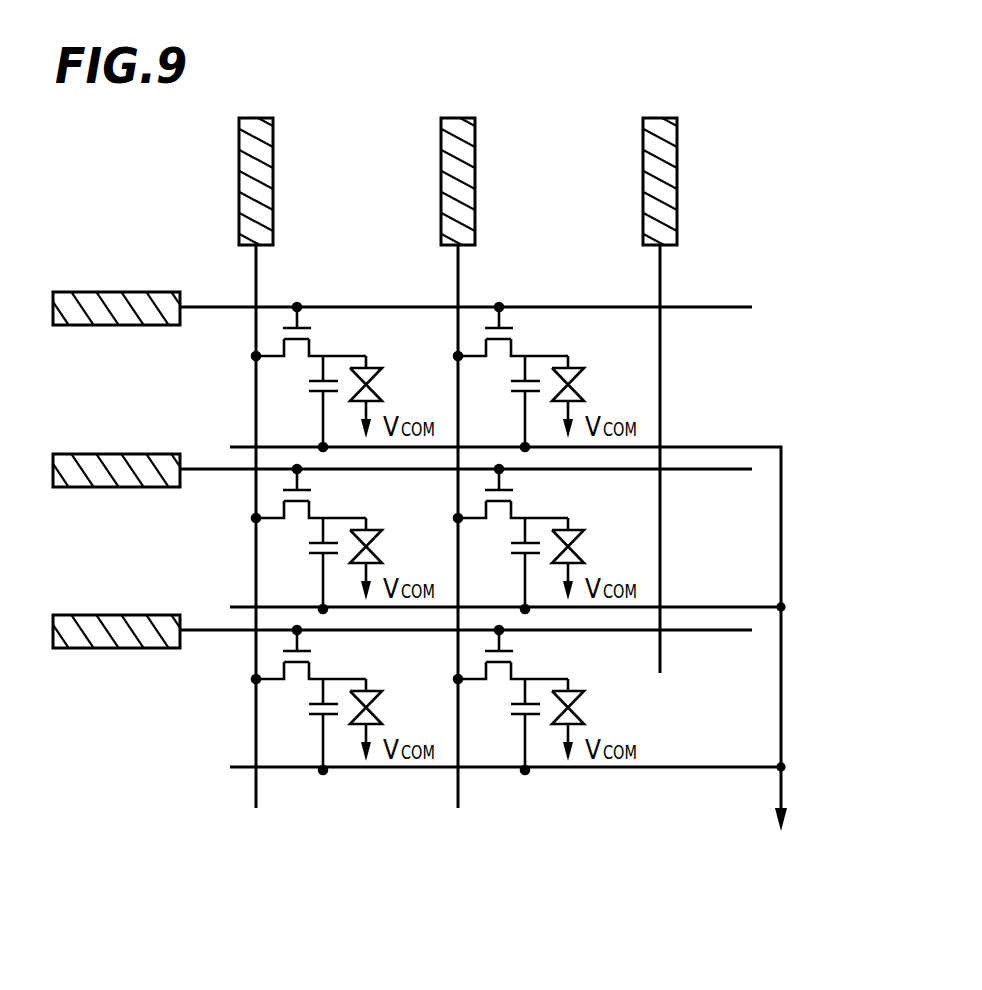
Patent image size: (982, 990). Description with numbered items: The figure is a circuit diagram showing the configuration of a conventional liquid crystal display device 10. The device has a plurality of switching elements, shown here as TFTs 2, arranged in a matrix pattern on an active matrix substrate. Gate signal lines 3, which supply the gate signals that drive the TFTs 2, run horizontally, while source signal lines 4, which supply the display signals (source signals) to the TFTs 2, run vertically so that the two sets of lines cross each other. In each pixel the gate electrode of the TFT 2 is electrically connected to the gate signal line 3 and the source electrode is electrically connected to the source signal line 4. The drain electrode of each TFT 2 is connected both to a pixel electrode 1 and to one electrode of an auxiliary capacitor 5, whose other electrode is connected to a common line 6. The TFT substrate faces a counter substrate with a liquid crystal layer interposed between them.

The pixel electrode 1 is at (581, 368).
The TFT 2 is at (509, 327).
The gate signal line 3 is at (722, 304).
The source signal line 4 is at (457, 287).
The auxiliary capacitor 5 is at (526, 380).
The common line 6 is at (758, 446).
The liquid crystal display device 10 is at (678, 62).